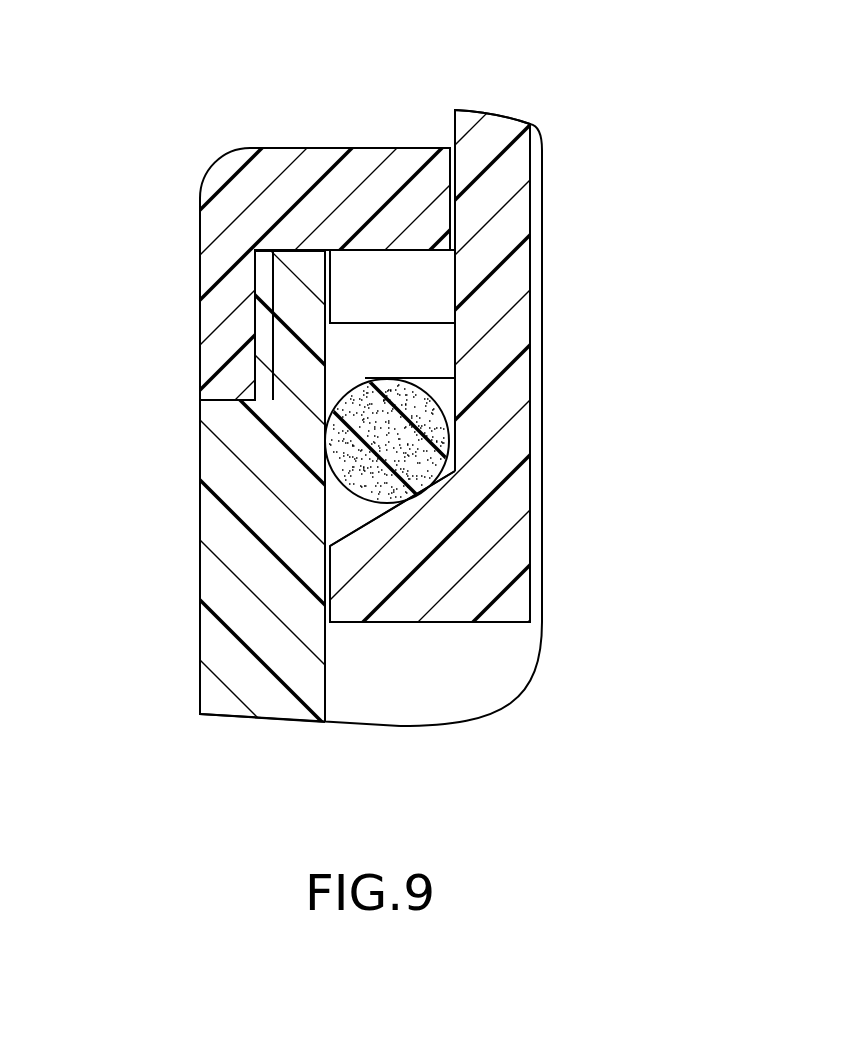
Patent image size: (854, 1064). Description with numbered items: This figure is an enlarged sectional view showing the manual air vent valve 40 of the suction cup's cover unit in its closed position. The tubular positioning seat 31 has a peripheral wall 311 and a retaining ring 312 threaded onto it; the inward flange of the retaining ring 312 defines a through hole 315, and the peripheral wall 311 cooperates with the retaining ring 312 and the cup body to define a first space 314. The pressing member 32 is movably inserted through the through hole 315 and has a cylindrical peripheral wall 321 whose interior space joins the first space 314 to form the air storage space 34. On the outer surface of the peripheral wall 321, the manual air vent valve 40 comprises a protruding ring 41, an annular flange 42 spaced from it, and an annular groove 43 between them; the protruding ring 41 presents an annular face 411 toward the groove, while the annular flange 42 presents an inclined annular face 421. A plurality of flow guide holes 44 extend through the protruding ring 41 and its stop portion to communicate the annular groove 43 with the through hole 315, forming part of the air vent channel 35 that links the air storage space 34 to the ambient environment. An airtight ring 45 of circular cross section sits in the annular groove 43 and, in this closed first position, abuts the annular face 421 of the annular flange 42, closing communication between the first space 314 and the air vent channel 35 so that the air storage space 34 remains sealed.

The positioning seat 31 is at (410, 400).
The peripheral wall 311 is at (215, 594).
The retaining ring 312 is at (217, 205).
The first space 314 is at (352, 685).
The through hole 315 is at (452, 232).
The pressing member 32 is at (427, 350).
The peripheral wall 321 is at (500, 135).
The air storage space 34 is at (540, 202).
The air vent channel 35 is at (450, 207).
The manual air vent valve 40 is at (320, 399).
The protruding ring 41 is at (273, 245).
The annular face 411 is at (410, 322).
The annular flange 42 is at (400, 607).
The annular face 421 is at (418, 492).
The annular groove 43 is at (435, 336).
The flow guide holes 44 is at (358, 300).
The airtight ring 45 is at (325, 431).